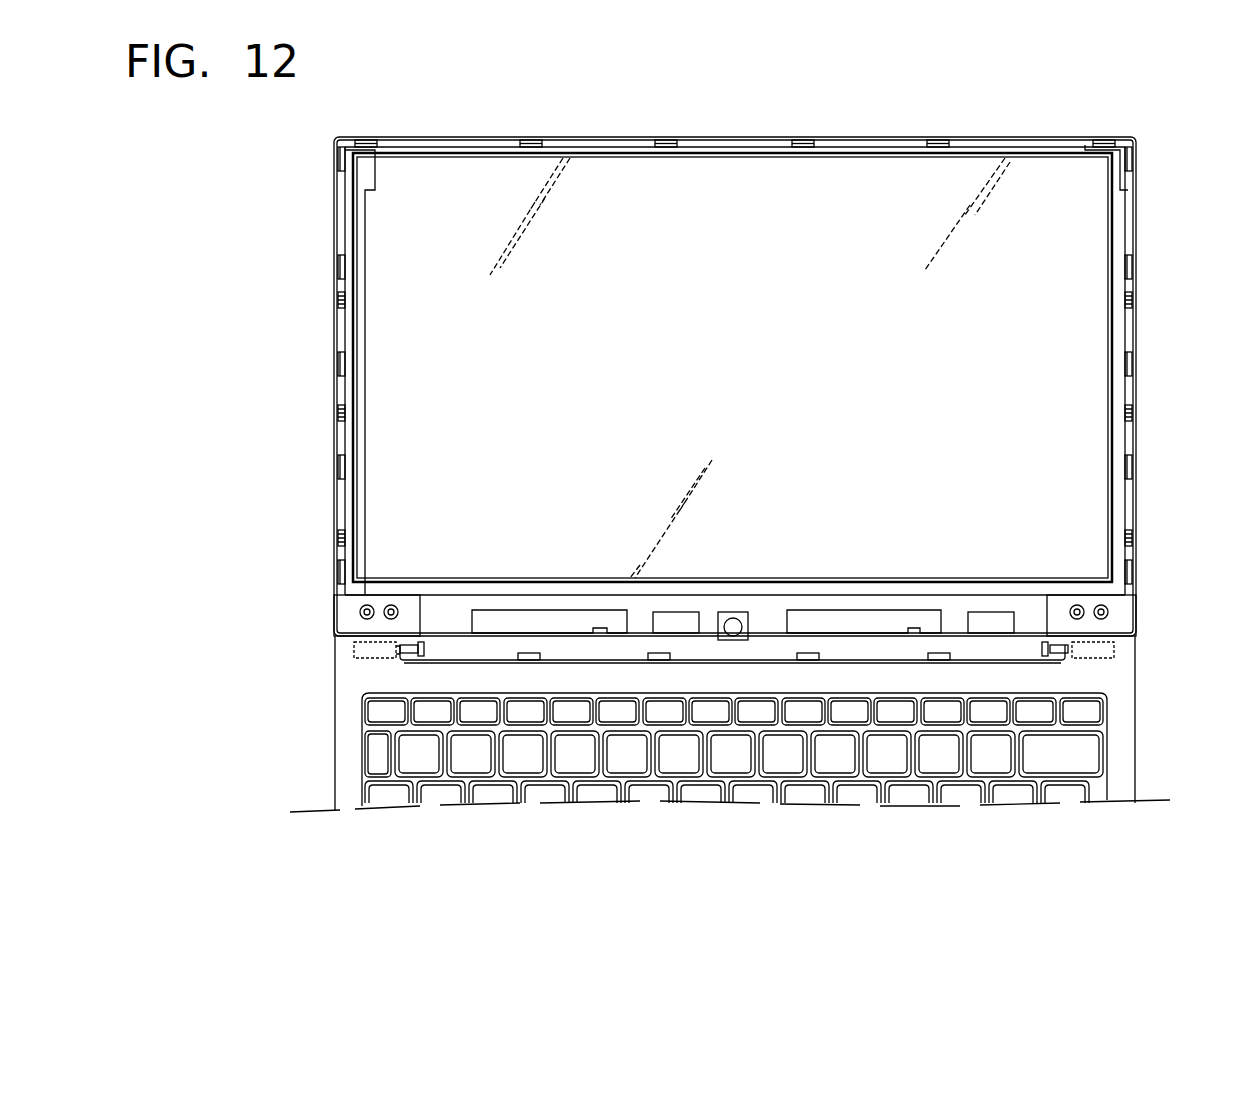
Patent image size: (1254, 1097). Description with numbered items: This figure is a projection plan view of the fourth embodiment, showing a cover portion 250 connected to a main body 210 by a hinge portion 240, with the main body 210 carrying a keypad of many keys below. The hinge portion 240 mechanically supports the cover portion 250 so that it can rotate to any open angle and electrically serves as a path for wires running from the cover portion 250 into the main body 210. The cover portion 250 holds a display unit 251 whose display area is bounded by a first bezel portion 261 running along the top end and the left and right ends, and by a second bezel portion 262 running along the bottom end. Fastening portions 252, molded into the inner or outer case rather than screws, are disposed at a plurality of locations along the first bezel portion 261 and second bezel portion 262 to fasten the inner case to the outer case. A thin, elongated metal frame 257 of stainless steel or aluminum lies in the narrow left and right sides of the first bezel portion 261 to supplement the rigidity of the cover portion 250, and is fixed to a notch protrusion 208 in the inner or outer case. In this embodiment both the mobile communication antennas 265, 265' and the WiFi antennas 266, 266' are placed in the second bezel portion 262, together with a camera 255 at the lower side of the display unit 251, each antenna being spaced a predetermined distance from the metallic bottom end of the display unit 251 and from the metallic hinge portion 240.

The cover portion 250 is at (1140, 456).
The display unit 251 is at (901, 190).
The fastening portions 252 is at (797, 138).
The metal frame 257 is at (337, 441).
The notch protrusion 208 is at (337, 537).
The first bezel portion 261 is at (1137, 186).
The hinge portion 240 is at (410, 655).
The second bezel portion 262 is at (1031, 622).
The mobile communication antenna 265 is at (544, 738).
The mobile communication antenna 265' is at (864, 738).
The WiFi antenna 266 is at (673, 739).
The WiFi antenna 266' is at (991, 739).
The camera 255 is at (733, 634).
The main body 210 is at (1142, 740).